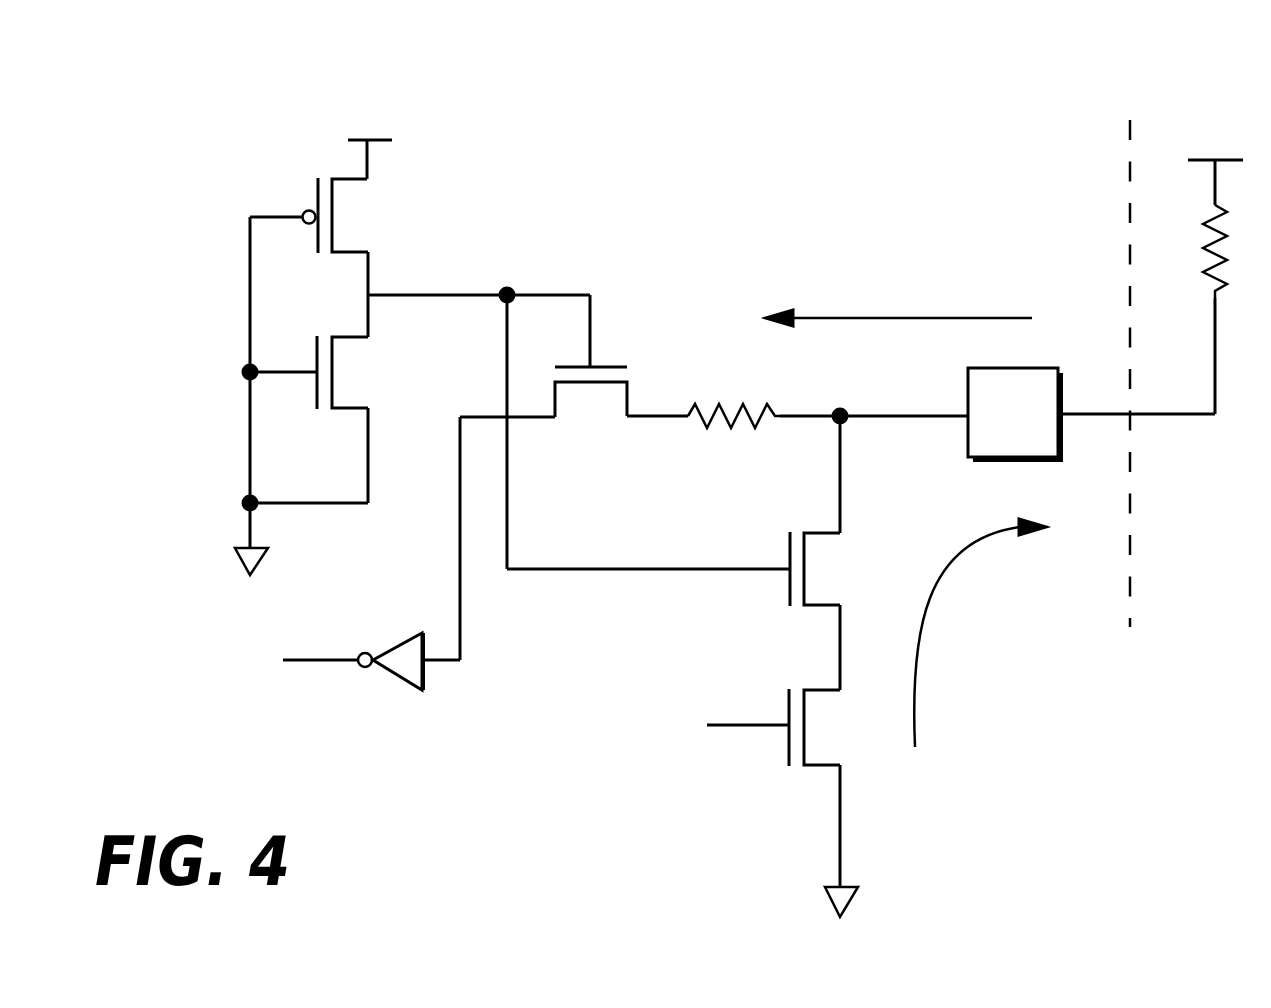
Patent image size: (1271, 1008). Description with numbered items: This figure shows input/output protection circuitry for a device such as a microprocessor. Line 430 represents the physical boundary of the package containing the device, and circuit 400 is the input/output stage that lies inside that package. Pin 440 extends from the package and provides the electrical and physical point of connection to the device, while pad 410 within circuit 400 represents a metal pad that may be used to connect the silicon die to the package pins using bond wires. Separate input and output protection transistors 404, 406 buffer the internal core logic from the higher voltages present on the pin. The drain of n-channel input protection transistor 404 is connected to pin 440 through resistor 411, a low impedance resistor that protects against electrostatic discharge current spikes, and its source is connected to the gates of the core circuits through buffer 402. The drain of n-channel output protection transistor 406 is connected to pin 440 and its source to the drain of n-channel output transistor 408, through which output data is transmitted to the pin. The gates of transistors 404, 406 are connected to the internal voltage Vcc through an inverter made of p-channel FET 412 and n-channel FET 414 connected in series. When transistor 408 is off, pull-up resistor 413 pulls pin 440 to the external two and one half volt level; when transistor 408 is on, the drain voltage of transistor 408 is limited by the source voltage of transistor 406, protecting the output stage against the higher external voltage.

The circuit 400 is at (636, 126).
The buffer 402 is at (331, 681).
The input protection transistor 404 is at (574, 417).
The output protection transistor 406 is at (783, 511).
The output transistor 408 is at (769, 727).
The pad 410 is at (1015, 415).
The resistor 411 is at (828, 437).
The p-channel FET 412 is at (327, 215).
The pull-up resistor 413 is at (1209, 243).
The n-channel FET 414 is at (324, 372).
The line 430 is at (1117, 360).
The pin 440 is at (1136, 442).